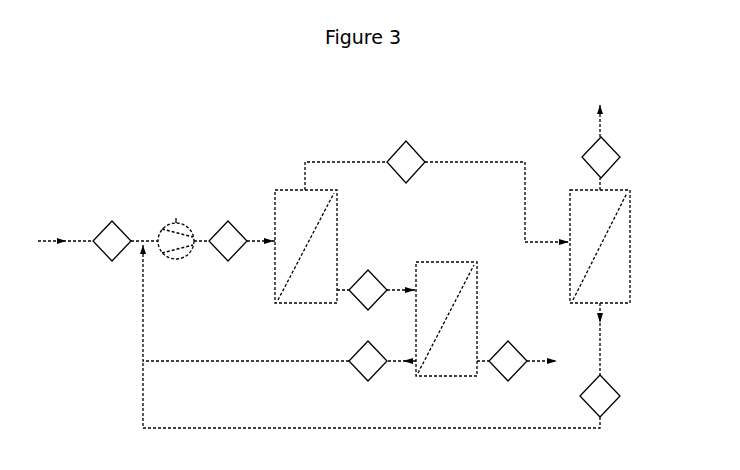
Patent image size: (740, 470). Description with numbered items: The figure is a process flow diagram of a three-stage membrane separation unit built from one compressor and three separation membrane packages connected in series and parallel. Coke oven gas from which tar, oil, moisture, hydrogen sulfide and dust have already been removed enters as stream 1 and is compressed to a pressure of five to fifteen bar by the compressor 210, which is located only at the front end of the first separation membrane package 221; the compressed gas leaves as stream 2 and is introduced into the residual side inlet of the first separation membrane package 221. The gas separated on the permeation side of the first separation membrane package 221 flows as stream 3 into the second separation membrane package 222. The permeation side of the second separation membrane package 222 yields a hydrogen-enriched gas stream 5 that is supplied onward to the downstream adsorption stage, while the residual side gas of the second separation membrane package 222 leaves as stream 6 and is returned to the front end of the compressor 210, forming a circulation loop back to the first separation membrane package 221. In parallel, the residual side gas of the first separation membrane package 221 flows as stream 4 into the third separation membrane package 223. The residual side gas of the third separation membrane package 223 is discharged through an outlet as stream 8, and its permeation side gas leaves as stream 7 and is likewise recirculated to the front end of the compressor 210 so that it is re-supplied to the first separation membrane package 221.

The compressor 210 is at (176, 223).
The first separation membrane package 221 is at (283, 190).
The second separation membrane package 222 is at (620, 190).
The third separation membrane package 223 is at (424, 262).
The stream 1 (feed gas) 1 is at (112, 241).
The stream 2 (compressed gas) 2 is at (228, 241).
The stream 3 (M-1 retentate) 3 is at (406, 162).
The stream 4 (M-1 permeate) 4 is at (368, 290).
The stream 5 (M-2 retentate) 5 is at (601, 157).
The stream 6 (M-2 permeate recycle) 6 is at (600, 396).
The stream 7 (M-3 retentate recycle) 7 is at (368, 361).
The stream 8 (M-3 permeate) 8 is at (508, 361).